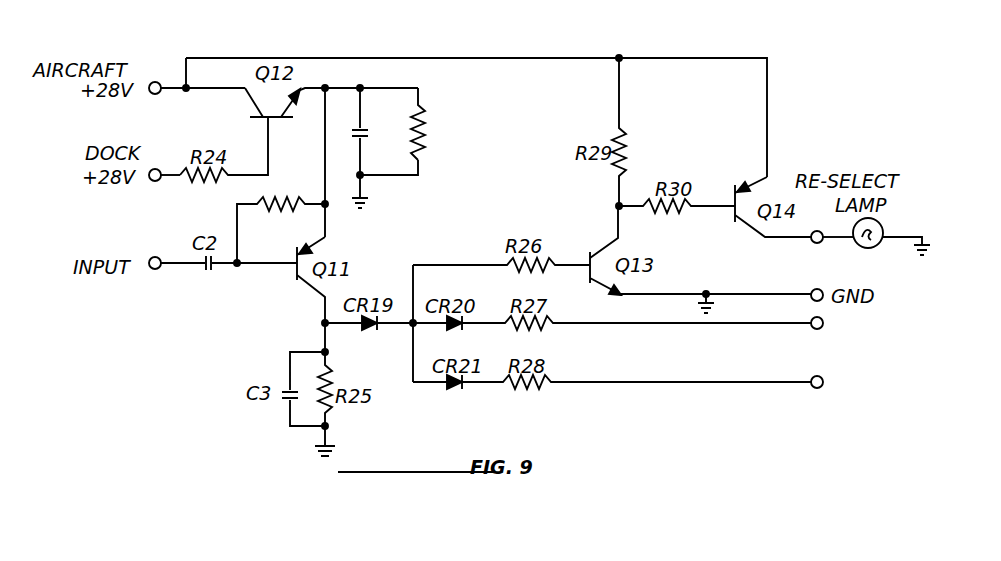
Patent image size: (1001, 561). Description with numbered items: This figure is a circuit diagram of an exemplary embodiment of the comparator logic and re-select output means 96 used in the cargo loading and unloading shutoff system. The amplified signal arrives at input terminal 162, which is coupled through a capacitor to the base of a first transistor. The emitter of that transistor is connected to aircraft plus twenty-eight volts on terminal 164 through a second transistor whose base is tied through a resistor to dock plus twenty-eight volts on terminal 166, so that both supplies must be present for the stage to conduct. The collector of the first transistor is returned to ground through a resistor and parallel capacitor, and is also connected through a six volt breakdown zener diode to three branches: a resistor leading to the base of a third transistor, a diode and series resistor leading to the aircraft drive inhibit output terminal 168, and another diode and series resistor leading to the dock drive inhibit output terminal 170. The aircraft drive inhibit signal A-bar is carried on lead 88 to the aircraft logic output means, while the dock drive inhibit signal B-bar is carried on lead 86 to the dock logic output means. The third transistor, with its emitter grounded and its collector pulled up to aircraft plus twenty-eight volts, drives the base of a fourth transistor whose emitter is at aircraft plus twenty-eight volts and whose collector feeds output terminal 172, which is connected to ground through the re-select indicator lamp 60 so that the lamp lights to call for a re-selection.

The aircraft +28 volts terminal 164 is at (160, 82).
The dock +28 volts terminal 166 is at (153, 181).
The input terminal 162 is at (152, 269).
The comparator logic and re-select output means 96 is at (814, 91).
The output terminal 172 is at (812, 242).
The re-select indicator lamp 60 is at (858, 245).
The aircraft drive inhibit output terminal 168 is at (811, 328).
The lead for aircraft drive inhibit signal 88 is at (821, 329).
The dock drive inhibit output terminal 170 is at (811, 387).
The lead for dock drive inhibit signal 86 is at (821, 388).